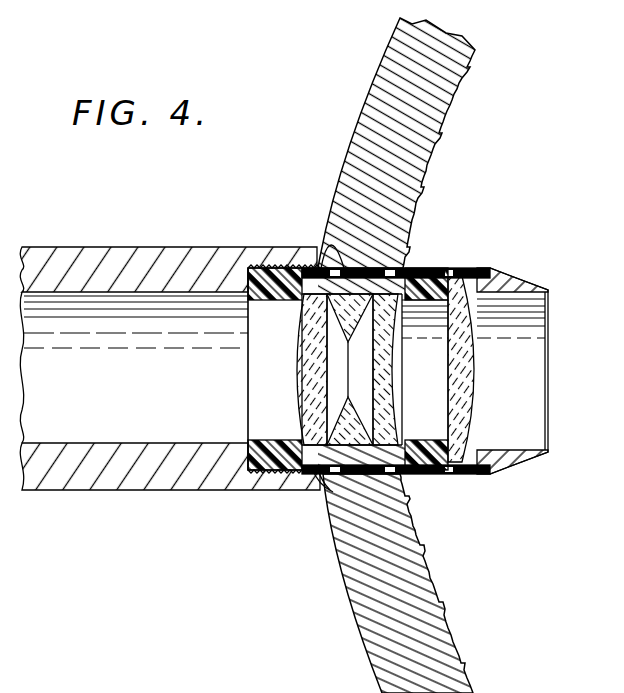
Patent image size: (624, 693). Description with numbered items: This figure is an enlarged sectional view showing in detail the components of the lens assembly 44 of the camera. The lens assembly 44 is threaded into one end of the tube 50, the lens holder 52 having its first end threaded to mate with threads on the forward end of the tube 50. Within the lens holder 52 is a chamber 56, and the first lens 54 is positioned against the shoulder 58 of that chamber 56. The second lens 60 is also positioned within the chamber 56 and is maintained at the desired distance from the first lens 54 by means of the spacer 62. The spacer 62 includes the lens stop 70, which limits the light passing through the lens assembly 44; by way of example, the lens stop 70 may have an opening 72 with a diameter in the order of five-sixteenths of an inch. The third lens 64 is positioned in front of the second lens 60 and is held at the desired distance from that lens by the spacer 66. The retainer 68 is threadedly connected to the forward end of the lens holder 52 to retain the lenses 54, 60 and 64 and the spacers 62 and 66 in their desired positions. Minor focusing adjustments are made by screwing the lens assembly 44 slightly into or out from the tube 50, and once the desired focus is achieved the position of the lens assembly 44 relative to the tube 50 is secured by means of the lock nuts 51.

The lens assembly 44 is at (478, 476).
The tube 50 is at (249, 266).
The lock nuts 51 is at (343, 268).
The lens holder 52 is at (272, 268).
The first lens 54 is at (296, 333).
The chamber 56 is at (283, 412).
The shoulder 58 is at (312, 472).
The second lens 60 is at (403, 388).
The spacer 62 is at (399, 476).
The third lens 64 is at (478, 270).
The spacer 66 is at (431, 268).
The retainer 68 is at (520, 282).
The lens stop 70 is at (336, 332).
The opening 72 is at (350, 344).